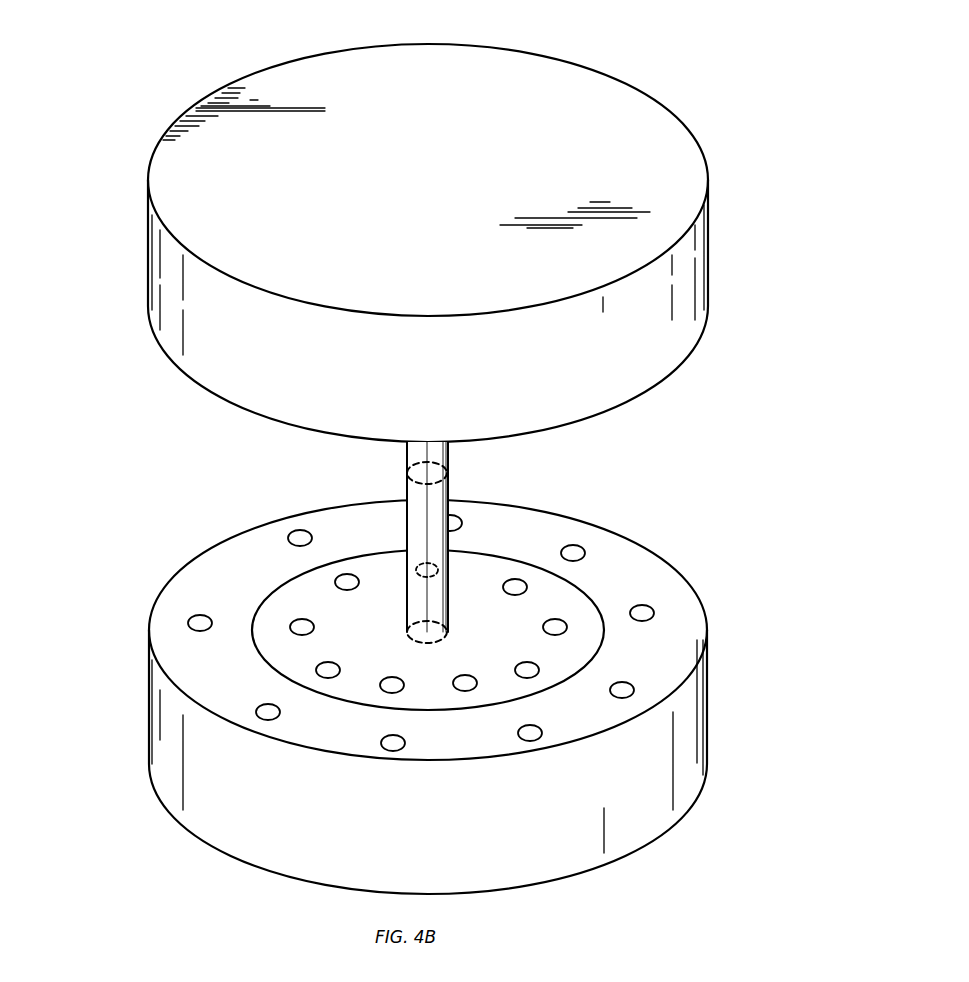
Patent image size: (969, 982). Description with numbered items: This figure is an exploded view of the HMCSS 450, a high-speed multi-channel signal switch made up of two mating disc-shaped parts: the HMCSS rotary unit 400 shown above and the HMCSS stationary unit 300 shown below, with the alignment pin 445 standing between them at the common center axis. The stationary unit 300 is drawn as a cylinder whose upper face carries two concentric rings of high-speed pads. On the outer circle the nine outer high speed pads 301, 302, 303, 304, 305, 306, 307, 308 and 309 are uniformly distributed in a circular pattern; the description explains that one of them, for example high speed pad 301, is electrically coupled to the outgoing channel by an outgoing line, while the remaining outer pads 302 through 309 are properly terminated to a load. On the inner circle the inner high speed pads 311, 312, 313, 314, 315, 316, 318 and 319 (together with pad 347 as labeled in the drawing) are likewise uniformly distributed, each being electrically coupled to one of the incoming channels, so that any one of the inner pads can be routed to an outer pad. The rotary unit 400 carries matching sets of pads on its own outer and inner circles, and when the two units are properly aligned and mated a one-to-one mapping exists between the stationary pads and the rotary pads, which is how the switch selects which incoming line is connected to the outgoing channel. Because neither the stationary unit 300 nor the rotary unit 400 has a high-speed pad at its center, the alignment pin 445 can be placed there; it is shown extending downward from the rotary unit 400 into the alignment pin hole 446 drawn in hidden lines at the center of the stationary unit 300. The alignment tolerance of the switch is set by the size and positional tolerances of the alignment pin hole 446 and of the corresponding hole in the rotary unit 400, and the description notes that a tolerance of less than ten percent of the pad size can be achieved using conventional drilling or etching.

The HMCSS 450 is at (216, 49).
The HMCSS rotary unit 400 is at (450, 226).
The HMCSS stationary unit 300 is at (716, 777).
The alignment pin 445 is at (267, 542).
The alignment pin hole 446 is at (420, 631).
The high speed pad 301 is at (455, 517).
The high speed pad 302 is at (289, 538).
The high speed pad 303 is at (190, 622).
The high speed pad 304 is at (257, 712).
The high speed pad 305 is at (397, 751).
The high speed pad 306 is at (537, 741).
The high speed pad 307 is at (634, 690).
The high speed pad 308 is at (654, 612).
The high speed pad 309 is at (576, 550).
The high speed pad 311 is at (434, 566).
The high speed pad 312 is at (346, 574).
The high speed pad 313 is at (298, 622).
The high speed pad 314 is at (317, 668).
The high speed pad 315 is at (381, 686).
The high speed pad 316 is at (454, 681).
The high speed pad 318 is at (549, 626).
The high speed pad 319 is at (521, 583).
The pad 347 is at (538, 668).